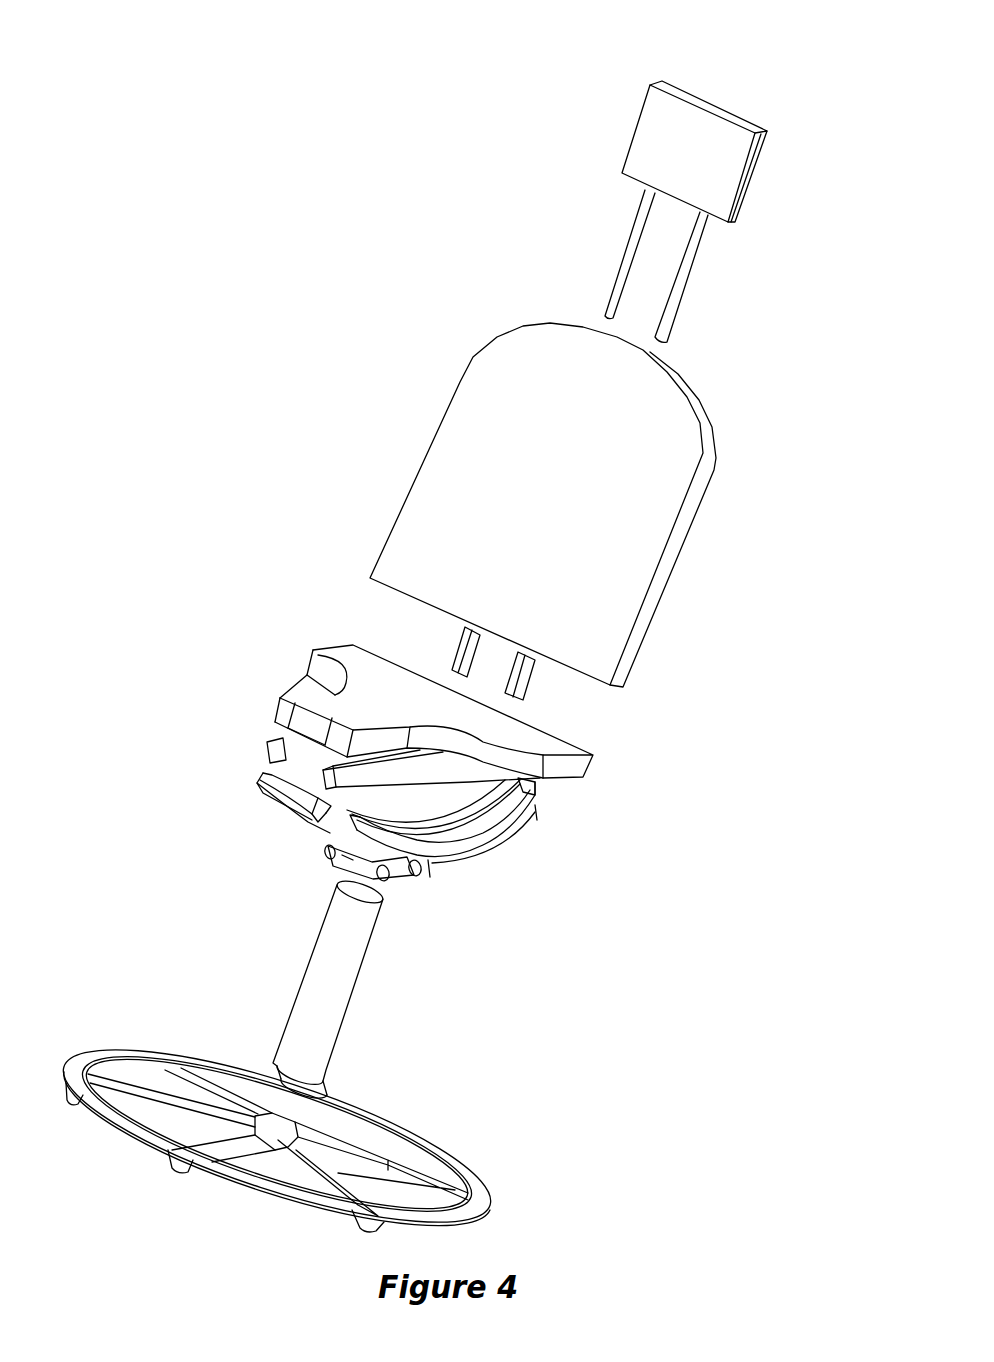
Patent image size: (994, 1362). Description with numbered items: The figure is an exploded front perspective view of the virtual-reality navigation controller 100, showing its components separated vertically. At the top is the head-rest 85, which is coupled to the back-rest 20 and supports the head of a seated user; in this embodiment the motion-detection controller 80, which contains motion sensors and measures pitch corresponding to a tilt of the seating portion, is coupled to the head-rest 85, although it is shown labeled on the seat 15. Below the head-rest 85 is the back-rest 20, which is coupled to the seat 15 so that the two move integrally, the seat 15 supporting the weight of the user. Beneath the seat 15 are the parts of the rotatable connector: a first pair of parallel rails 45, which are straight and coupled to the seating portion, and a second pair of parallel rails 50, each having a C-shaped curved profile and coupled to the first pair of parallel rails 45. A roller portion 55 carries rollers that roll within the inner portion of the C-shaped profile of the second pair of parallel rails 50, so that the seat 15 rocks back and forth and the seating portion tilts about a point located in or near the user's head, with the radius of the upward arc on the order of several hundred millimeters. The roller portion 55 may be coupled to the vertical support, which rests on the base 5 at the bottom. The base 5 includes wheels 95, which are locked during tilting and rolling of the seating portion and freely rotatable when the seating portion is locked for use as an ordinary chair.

The virtual-reality navigation controller 100 is at (511, 17).
The head-rest 85 is at (668, 128).
The back-rest 20 is at (502, 478).
The seat 15 is at (499, 711).
The motion-detection controller 80 is at (306, 734).
The first pair of parallel rails 45 is at (322, 768).
The second pair of parallel rails 50 is at (330, 830).
The roller portion 55 is at (338, 870).
The base 5 is at (485, 1218).
The wheels 95 is at (70, 1108).